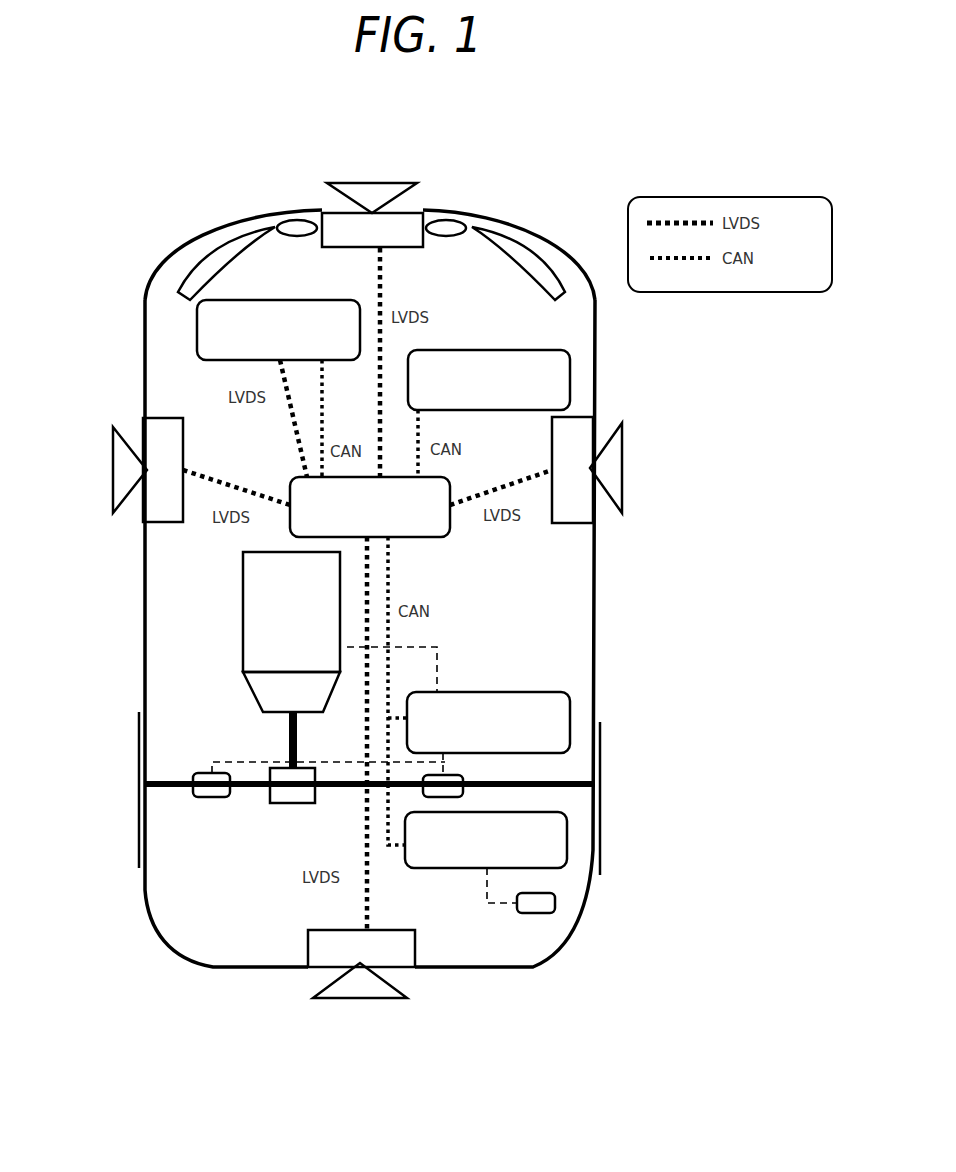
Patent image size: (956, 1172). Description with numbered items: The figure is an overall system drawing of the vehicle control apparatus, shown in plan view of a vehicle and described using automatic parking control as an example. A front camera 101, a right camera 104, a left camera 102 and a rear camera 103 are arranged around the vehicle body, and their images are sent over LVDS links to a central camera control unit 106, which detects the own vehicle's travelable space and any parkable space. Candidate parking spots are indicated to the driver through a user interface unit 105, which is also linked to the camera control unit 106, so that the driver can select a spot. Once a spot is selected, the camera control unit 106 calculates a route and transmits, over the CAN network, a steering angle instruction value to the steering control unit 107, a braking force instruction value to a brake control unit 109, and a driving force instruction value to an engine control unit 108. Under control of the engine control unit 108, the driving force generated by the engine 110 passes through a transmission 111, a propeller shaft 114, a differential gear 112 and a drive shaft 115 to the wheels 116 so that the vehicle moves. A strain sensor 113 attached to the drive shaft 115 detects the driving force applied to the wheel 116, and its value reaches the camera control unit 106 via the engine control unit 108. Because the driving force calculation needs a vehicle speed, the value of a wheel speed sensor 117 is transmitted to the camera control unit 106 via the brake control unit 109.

The front camera 101 is at (433, 210).
The left camera 102 is at (127, 422).
The rear camera 103 is at (417, 947).
The right camera 104 is at (627, 442).
The user interface unit 105 is at (267, 298).
The camera control unit 106 is at (440, 535).
The steering control unit 107 is at (457, 350).
The engine control unit 108 is at (458, 692).
The brake control unit 109 is at (445, 870).
The engine 110 is at (268, 647).
The transmission 111 is at (290, 707).
The differential gear 112 is at (267, 803).
The strain sensor 113 is at (193, 778).
The propeller shaft 114 is at (290, 752).
The drive shaft 115 is at (140, 837).
The wheels 116 is at (590, 813).
The wheel speed sensor 117 is at (555, 913).